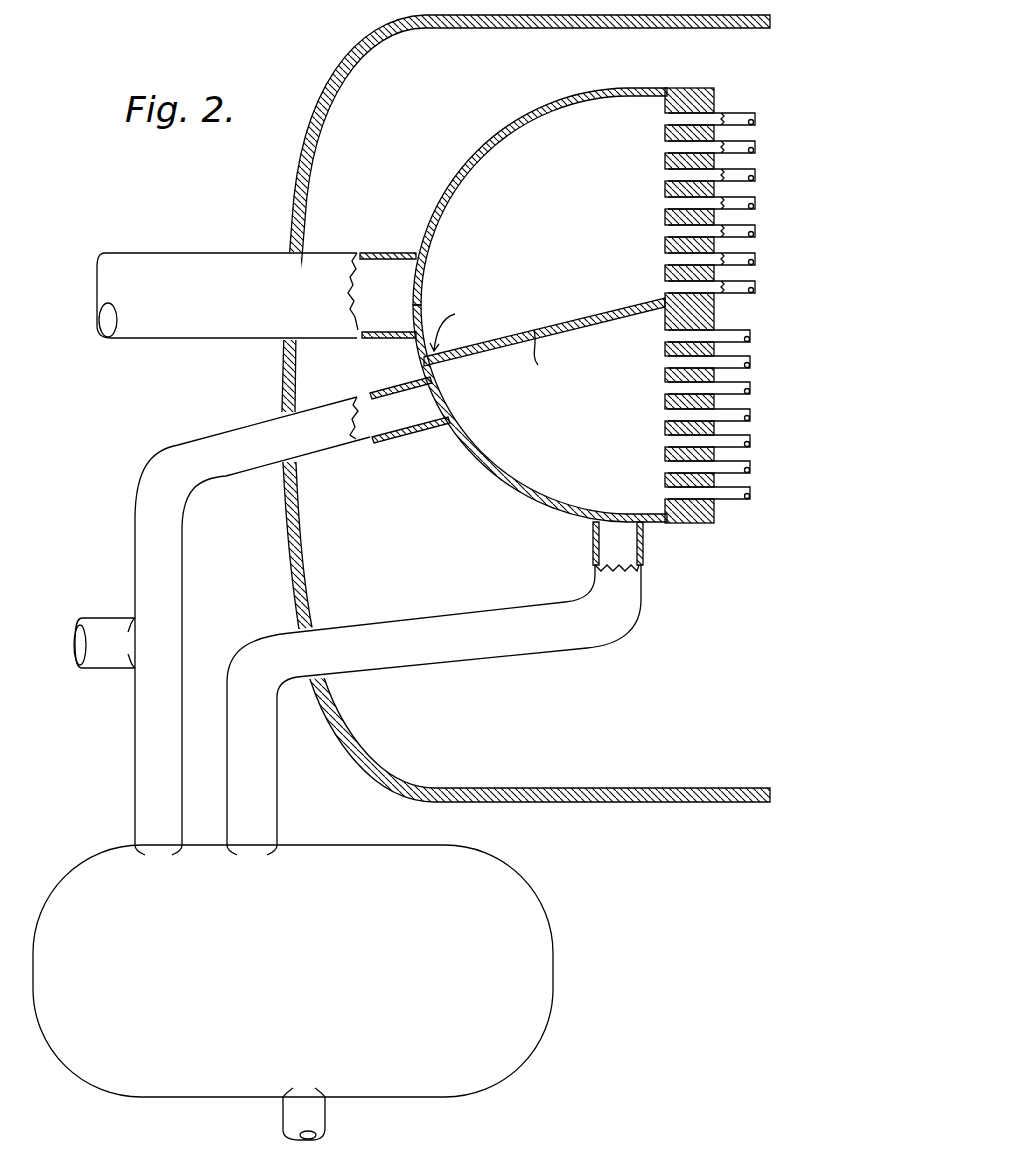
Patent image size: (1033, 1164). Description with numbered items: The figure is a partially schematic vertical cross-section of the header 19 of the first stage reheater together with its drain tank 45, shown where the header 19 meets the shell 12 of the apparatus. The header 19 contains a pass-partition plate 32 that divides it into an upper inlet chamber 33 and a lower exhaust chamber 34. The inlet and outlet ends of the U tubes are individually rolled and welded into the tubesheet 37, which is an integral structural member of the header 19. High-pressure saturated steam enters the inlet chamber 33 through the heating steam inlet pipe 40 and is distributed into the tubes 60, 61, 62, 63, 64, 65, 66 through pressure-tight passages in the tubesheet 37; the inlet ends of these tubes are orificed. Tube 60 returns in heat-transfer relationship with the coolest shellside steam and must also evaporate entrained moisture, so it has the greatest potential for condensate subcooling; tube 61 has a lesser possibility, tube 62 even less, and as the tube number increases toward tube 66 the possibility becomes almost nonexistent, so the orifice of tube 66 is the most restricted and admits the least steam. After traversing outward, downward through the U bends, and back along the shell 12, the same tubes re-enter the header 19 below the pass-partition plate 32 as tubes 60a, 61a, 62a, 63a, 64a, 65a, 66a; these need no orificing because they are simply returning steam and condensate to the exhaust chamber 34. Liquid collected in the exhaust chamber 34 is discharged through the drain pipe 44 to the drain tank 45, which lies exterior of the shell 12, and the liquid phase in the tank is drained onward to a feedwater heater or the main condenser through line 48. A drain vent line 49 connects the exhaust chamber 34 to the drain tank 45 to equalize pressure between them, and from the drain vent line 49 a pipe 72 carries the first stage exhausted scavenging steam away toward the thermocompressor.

The shell 12 is at (530, 802).
The header 19 is at (540, 299).
The pass-partition plate 32 is at (605, 318).
The upper inlet chamber 33 is at (487, 180).
The lower exhaust chamber 34 is at (527, 463).
The tubesheet 37 is at (686, 88).
The heating steam inlet pipe 40 is at (170, 264).
The drain pipe 44 is at (495, 645).
The drain tank 45 is at (362, 863).
The line 48 is at (322, 1115).
The drain vent line 49 is at (142, 566).
The pipe 72 is at (78, 640).
The tube 60 is at (750, 116).
The tube 61 is at (752, 144).
The tube 62 is at (750, 172).
The tube 63 is at (752, 200).
The tube 64 is at (752, 228).
The tube 65 is at (752, 256).
The tube 66 is at (752, 284).
The tube return end 60a is at (752, 494).
The tube return end 61a is at (750, 467).
The tube return end 62a is at (750, 441).
The tube return end 63a is at (750, 415).
The tube return end 64a is at (750, 388).
The tube return end 65a is at (750, 362).
The tube return end 66a is at (750, 336).